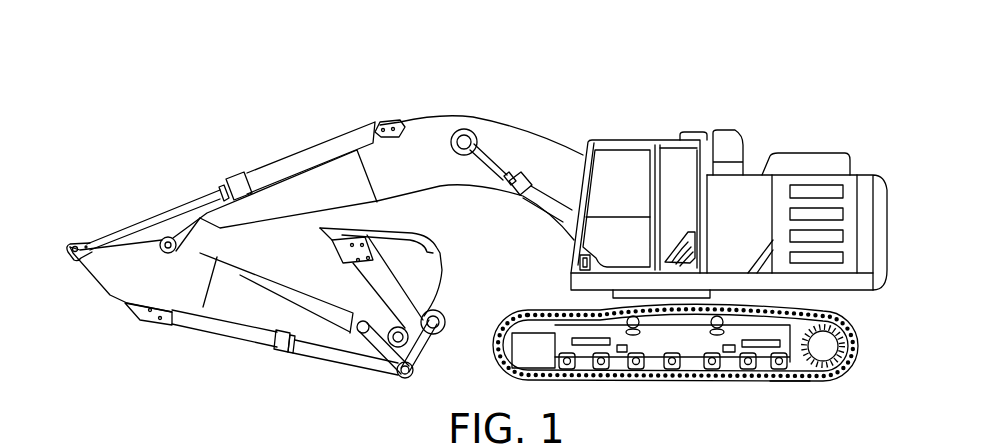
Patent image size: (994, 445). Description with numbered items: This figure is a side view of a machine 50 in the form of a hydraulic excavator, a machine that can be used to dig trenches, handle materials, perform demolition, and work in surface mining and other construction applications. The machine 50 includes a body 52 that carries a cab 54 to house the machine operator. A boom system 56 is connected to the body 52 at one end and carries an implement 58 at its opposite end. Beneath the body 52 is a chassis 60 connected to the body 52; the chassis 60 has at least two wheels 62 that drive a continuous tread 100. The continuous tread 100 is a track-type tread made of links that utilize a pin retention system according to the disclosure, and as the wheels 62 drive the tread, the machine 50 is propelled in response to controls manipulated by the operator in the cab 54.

The machine 50 is at (722, 70).
The body 52 is at (735, 197).
The cab 54 is at (620, 172).
The boom system 56 is at (312, 188).
The implement 58 is at (420, 277).
The chassis 60 is at (683, 347).
The wheels 62 is at (530, 330).
The continuous tread 100 is at (790, 377).